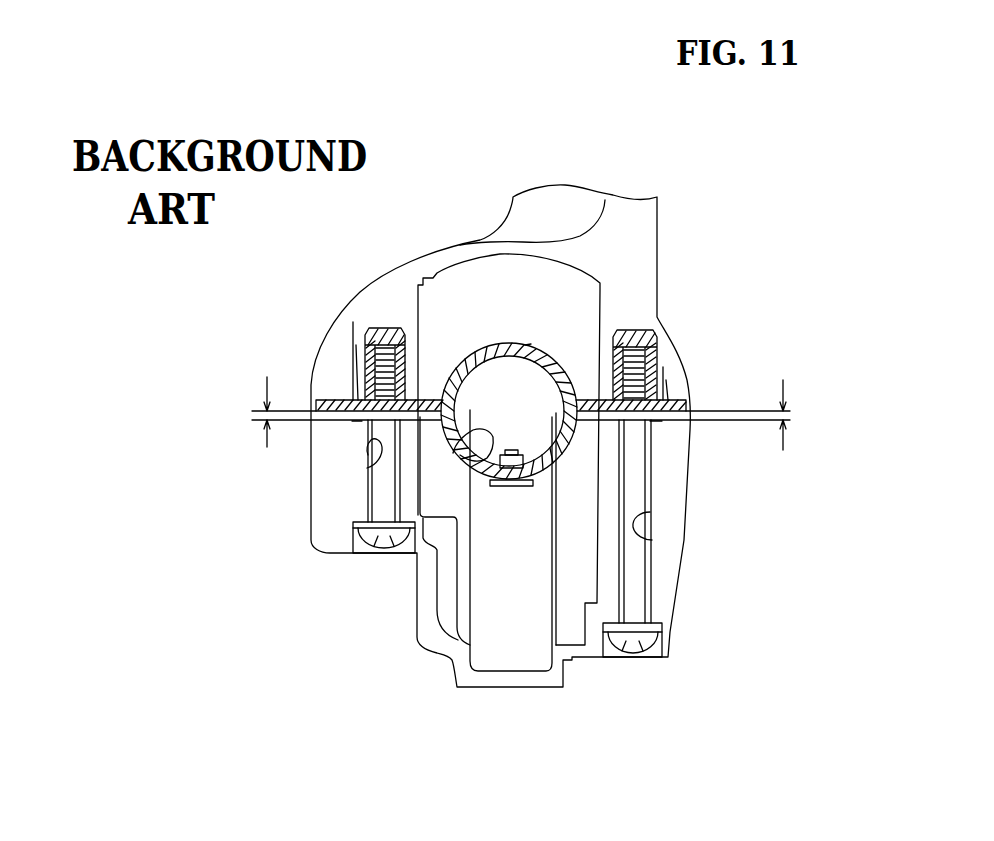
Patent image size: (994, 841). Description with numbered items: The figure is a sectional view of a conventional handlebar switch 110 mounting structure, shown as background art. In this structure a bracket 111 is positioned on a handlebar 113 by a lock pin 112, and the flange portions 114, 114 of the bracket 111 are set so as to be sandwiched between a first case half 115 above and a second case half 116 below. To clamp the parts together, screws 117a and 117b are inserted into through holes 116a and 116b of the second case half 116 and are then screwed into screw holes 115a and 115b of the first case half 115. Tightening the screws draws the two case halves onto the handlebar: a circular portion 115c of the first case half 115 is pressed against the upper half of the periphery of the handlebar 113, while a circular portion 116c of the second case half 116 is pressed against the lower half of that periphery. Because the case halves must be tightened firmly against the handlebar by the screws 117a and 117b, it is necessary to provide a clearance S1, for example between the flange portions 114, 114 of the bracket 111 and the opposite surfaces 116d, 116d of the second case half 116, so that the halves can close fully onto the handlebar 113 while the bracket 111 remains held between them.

The handlebar switch 110 is at (750, 179).
The bracket 111 is at (520, 430).
The lock pin 112 is at (515, 480).
The handlebar 113 is at (497, 343).
The flange portion 114 is at (352, 370).
The first case half 115 is at (658, 229).
The screw hole 115a is at (383, 330).
The screw hole 115b is at (657, 358).
The circular portion 115c is at (527, 345).
The second case half 116 is at (677, 582).
The through hole 116a is at (367, 468).
The through hole 116b is at (652, 540).
The circular portion 116c is at (465, 458).
The opposite surface 116d is at (357, 419).
The screw 117a is at (384, 553).
The screw 117b is at (637, 640).
The clearance S1 is at (527, 412).